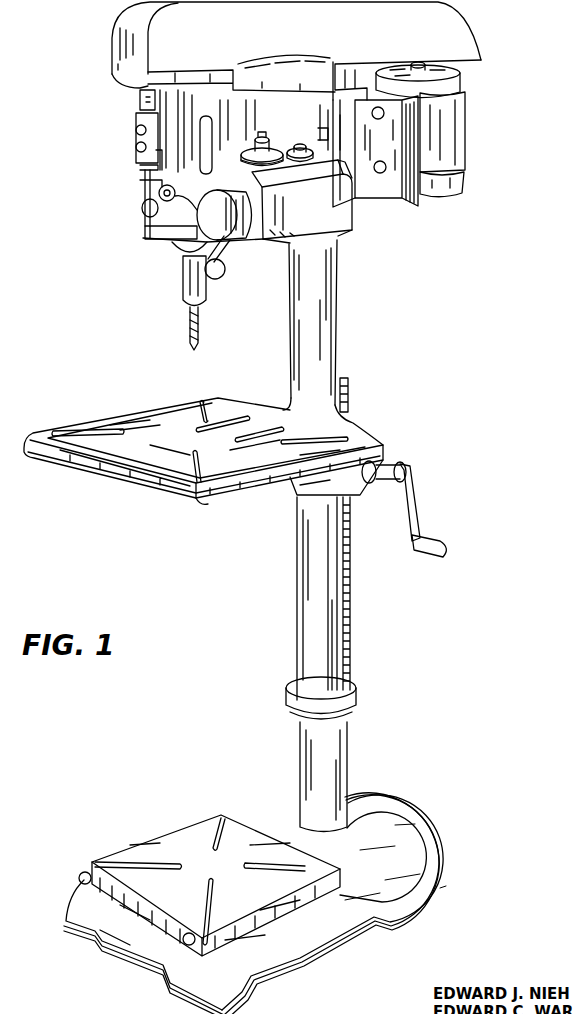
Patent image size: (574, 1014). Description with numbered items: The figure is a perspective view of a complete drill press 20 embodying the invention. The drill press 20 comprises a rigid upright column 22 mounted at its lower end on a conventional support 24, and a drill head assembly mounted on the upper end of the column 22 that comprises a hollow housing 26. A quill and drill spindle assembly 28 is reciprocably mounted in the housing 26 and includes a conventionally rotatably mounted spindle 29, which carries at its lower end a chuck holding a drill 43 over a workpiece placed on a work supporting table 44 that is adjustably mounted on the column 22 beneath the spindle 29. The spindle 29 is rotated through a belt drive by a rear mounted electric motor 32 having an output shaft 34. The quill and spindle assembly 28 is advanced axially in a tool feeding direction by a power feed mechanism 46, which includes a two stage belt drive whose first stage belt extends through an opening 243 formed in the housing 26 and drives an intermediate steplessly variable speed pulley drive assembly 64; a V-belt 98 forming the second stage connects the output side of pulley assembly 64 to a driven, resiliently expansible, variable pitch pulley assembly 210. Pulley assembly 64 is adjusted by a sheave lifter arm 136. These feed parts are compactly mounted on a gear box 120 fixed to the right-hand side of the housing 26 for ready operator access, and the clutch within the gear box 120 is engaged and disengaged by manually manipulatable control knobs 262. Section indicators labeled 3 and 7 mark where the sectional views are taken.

The drill press 20 is at (397, 295).
The rigid upright column 22 is at (330, 640).
The support 24 is at (398, 840).
The hollow housing 26 is at (140, 96).
The quill and drill spindle assembly 28 is at (162, 248).
The spindle 29 is at (186, 284).
The electric motor 32 is at (462, 178).
The output shaft 34 is at (458, 76).
The drill 43 is at (189, 323).
The work supporting table 44 is at (92, 420).
The power feed mechanism 46 is at (285, 136).
The intermediate steplessly variable speed pulley drive assembly 64 is at (242, 157).
The V-belt 98 is at (205, 213).
The gear box 120 is at (352, 221).
The sheave lifter arm 136 is at (264, 135).
The driven resiliently expansible variable pitch pulley assembly 210 is at (302, 201).
The opening 243 is at (322, 130).
The control knobs 262 is at (226, 266).
The section line FIG. 3 is at (114, 148).
The section line FIG. 7 is at (352, 197).